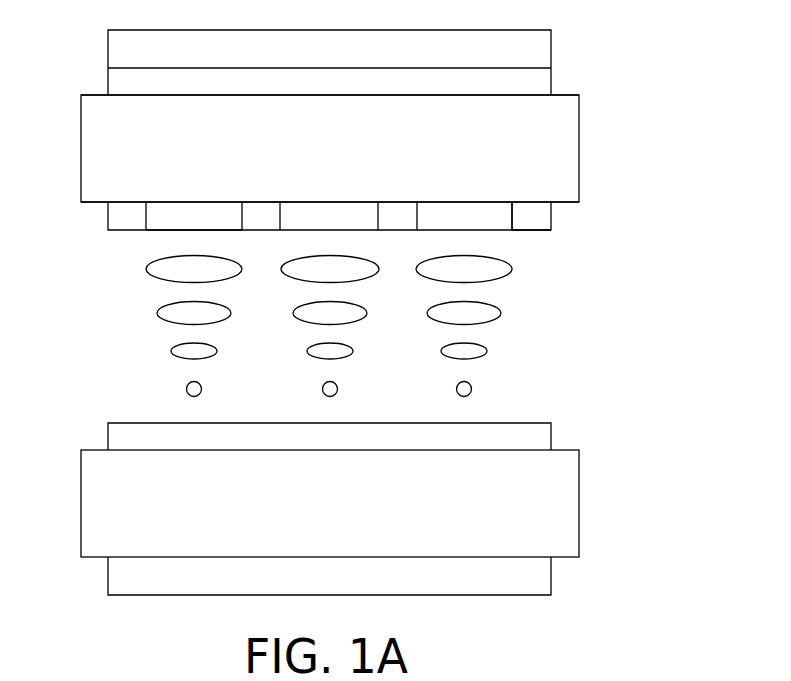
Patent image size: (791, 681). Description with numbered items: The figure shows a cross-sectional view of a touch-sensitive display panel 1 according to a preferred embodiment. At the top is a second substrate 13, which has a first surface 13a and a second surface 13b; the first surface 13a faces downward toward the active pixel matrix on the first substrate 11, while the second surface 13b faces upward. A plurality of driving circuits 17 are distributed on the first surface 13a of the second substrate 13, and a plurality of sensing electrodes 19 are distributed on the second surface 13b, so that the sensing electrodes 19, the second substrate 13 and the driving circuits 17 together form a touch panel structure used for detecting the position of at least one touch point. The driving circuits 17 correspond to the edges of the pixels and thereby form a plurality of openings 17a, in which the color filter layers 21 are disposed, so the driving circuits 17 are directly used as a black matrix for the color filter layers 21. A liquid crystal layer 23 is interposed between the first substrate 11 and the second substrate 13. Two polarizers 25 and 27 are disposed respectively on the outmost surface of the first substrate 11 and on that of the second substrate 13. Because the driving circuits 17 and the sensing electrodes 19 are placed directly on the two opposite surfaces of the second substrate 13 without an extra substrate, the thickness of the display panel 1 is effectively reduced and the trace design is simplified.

The touch-sensitive display panel 1 is at (694, 33).
The polarizer 27 is at (551, 47).
The sensing electrodes 19 is at (551, 80).
The second substrate 13 is at (579, 147).
The first surface 13a is at (87, 205).
The second surface 13b is at (93, 92).
The driving circuits 17 is at (551, 215).
The openings 17a is at (157, 234).
The color filter layers 21 is at (497, 220).
The liquid crystal layer 23 is at (534, 327).
The first substrate 11 is at (579, 503).
The polarizer 25 is at (551, 575).